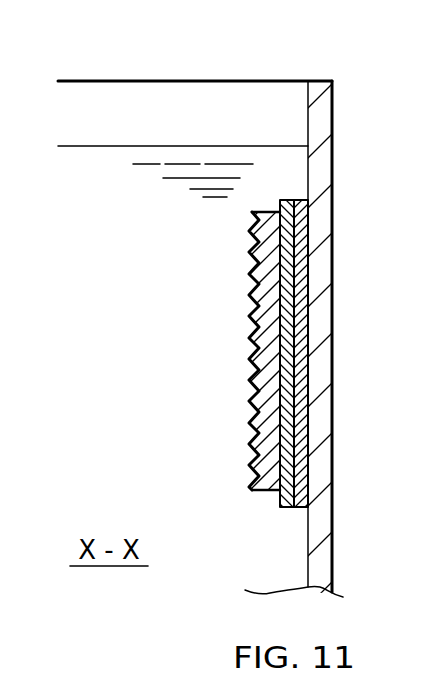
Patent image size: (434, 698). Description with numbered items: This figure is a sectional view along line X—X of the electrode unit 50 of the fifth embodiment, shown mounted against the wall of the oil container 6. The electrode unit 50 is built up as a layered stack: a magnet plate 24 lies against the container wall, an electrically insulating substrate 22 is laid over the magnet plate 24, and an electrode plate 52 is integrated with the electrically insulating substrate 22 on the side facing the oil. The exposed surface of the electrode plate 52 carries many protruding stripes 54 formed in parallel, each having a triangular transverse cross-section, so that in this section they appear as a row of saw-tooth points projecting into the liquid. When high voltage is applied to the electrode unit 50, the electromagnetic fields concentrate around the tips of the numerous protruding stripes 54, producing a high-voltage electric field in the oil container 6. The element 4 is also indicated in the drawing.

The liquid bath 4 is at (105, 184).
The oil container 6 is at (321, 161).
The electrically insulating substrate 22 is at (287, 430).
The magnet plate 24 is at (310, 258).
The electrode unit 50 is at (232, 315).
The electrode plate 52 is at (270, 343).
The protruding stripes 54 is at (253, 263).